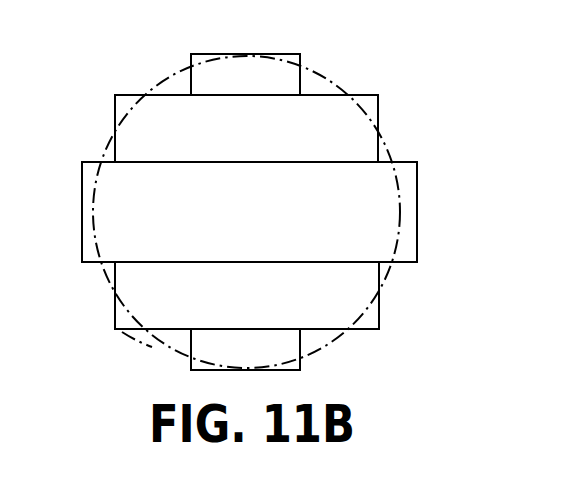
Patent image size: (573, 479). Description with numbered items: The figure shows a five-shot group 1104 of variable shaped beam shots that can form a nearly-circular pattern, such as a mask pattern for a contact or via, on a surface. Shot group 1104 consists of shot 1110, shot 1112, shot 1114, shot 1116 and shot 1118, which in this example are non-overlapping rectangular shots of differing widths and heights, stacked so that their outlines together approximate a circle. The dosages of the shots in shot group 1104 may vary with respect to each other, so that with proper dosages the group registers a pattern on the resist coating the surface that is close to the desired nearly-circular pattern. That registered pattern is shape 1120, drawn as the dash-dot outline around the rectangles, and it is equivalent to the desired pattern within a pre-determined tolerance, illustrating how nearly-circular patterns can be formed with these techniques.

The shot group 1104 is at (120, 80).
The shot 1110 is at (300, 53).
The shot 1112 is at (377, 100).
The shot 1114 is at (413, 198).
The shot 1116 is at (377, 326).
The shot 1118 is at (298, 361).
The shape 1120 is at (142, 338).